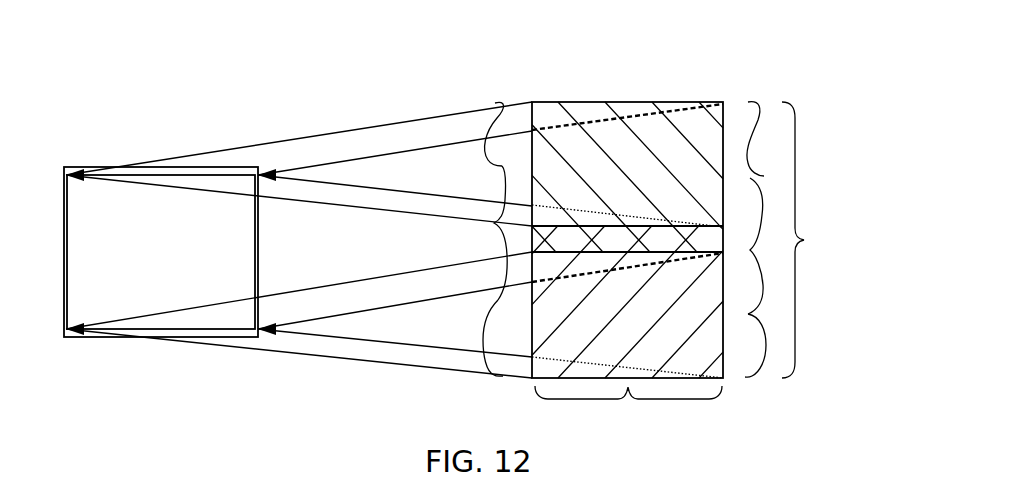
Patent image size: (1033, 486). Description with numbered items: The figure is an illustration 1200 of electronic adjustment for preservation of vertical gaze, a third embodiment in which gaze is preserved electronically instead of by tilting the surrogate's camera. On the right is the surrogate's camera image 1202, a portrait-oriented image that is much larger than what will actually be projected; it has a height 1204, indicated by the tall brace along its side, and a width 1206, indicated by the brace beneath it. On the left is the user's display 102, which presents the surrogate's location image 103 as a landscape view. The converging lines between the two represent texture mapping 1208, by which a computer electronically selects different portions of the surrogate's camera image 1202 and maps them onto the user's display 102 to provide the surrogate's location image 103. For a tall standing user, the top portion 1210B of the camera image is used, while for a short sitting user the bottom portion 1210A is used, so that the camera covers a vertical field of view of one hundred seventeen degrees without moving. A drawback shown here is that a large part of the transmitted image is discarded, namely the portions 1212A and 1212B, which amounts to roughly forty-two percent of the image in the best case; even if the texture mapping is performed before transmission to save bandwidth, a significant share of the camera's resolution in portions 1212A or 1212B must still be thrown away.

The illustration of electronic adjustment for preservation of vertical gaze 1200 is at (250, 96).
The user's display 102 is at (127, 338).
The surrogate's location image 103 is at (168, 249).
The surrogate's camera image 1202 is at (636, 90).
The height 1204 is at (804, 240).
The width 1206 is at (628, 408).
The texture mapping 1208 is at (340, 380).
The bottom portion of the surrogate's camera image 1210A is at (484, 355).
The top portion of the surrogate's camera image 1210B is at (773, 165).
The discarded portion of the surrogate's camera image 1212A is at (483, 150).
The discarded portion of the surrogate's camera image 1212B is at (775, 323).